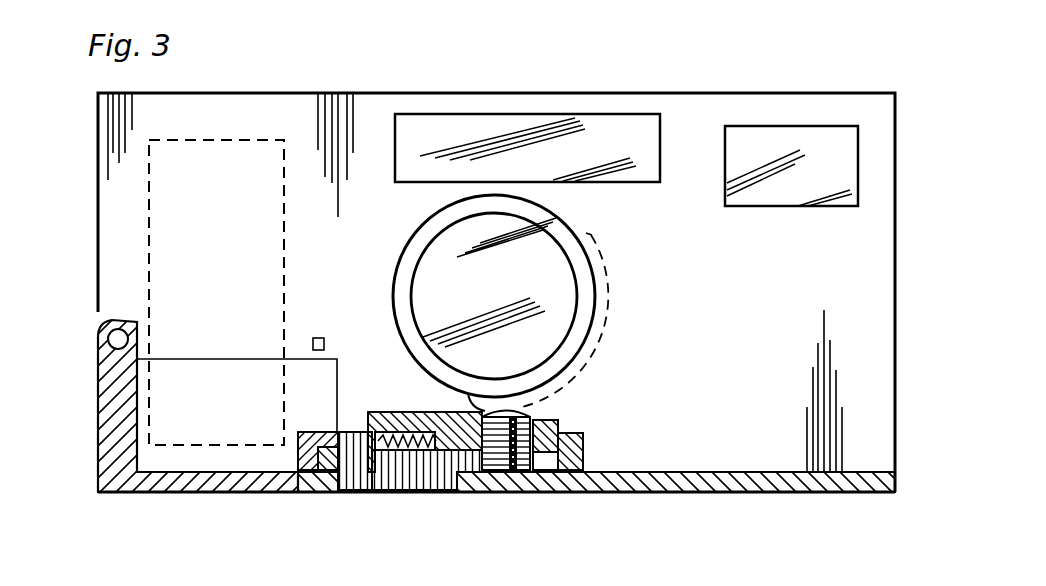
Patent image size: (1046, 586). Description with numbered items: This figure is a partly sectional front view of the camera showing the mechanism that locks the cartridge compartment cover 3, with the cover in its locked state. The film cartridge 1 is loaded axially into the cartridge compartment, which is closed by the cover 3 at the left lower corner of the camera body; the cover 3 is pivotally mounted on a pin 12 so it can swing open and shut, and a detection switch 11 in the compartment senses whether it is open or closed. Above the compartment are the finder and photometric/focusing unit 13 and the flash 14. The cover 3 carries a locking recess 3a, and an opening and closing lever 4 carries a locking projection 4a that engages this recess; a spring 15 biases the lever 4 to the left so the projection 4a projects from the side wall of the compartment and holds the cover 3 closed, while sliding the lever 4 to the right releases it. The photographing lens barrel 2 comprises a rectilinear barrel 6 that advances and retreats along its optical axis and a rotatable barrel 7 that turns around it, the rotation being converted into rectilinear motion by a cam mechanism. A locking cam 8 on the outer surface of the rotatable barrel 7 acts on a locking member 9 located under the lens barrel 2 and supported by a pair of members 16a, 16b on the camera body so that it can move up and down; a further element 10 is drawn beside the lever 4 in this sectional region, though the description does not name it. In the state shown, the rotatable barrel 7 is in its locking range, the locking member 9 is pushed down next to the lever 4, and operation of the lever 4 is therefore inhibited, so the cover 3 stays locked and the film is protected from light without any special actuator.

The film cartridge 1 is at (237, 140).
The photographing lens barrel 2 is at (566, 296).
The cartridge compartment cover 3 is at (158, 493).
The locking recess 3a is at (320, 472).
The opening and closing lever 4 is at (402, 480).
The locking projection 4a is at (347, 490).
The rectilinear barrel 6 is at (577, 298).
The rotatable barrel 7 is at (593, 260).
The locking cam 8 is at (600, 345).
The locking member 9 is at (485, 411).
The motor 10 is at (515, 475).
The detection switch 11 is at (320, 338).
The pin 12 is at (104, 330).
The finder and photometric/focusing unit 13 is at (600, 114).
The flash 14 is at (795, 126).
The spring 15 is at (445, 490).
The supporting member 16a is at (578, 480).
The supporting member 16b is at (585, 445).